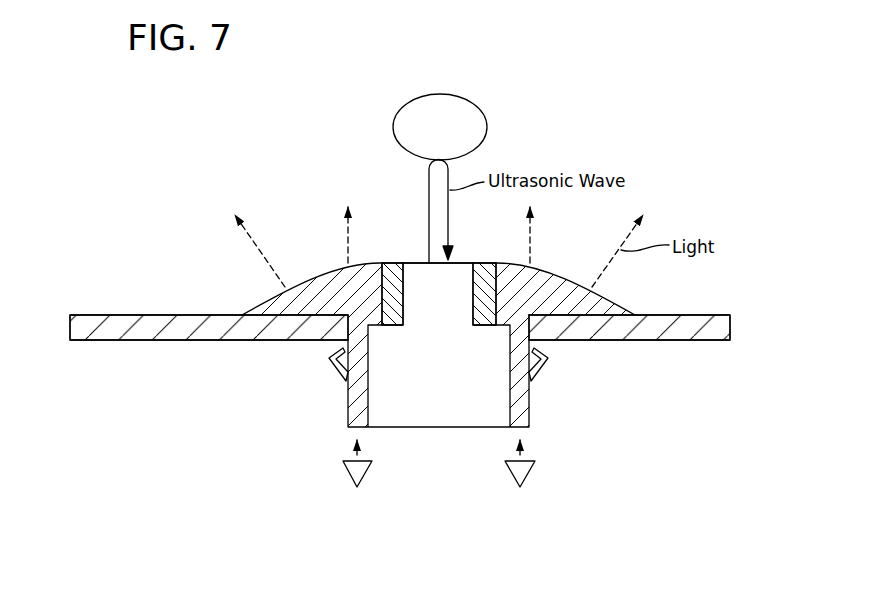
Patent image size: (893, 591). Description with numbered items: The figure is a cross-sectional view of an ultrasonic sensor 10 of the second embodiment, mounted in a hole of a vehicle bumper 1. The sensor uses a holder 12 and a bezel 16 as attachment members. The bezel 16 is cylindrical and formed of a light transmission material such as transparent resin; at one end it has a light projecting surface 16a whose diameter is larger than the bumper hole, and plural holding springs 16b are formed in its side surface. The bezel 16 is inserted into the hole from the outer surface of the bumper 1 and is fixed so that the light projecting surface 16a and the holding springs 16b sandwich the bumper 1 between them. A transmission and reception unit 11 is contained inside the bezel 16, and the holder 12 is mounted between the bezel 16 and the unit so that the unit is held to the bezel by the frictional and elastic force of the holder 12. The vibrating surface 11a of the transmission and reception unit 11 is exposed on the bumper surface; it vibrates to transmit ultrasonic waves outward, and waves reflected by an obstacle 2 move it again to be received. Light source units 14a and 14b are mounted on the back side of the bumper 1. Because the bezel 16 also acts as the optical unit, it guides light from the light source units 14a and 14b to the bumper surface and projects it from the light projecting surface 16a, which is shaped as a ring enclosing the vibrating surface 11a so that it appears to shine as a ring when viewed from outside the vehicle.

The bumper 1 is at (122, 315).
The obstacle 2 is at (487, 115).
The ultrasonic sensor 10 is at (186, 207).
The transmission and reception unit 11 is at (426, 418).
The vibrating surface 11a is at (415, 262).
The holder 12 is at (488, 291).
The light source unit 14a is at (349, 479).
The light source unit 14b is at (527, 479).
The bezel 16 is at (531, 408).
The light projecting surface 16a is at (268, 299).
The holding springs 16b is at (336, 372).